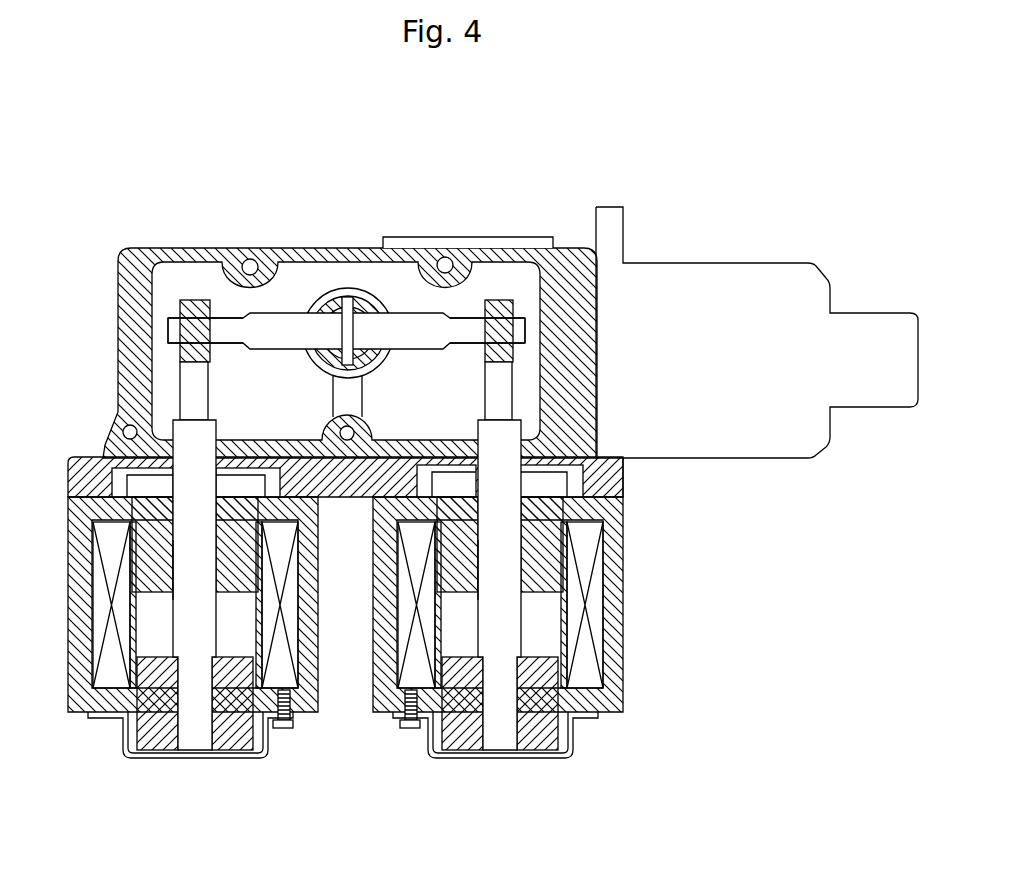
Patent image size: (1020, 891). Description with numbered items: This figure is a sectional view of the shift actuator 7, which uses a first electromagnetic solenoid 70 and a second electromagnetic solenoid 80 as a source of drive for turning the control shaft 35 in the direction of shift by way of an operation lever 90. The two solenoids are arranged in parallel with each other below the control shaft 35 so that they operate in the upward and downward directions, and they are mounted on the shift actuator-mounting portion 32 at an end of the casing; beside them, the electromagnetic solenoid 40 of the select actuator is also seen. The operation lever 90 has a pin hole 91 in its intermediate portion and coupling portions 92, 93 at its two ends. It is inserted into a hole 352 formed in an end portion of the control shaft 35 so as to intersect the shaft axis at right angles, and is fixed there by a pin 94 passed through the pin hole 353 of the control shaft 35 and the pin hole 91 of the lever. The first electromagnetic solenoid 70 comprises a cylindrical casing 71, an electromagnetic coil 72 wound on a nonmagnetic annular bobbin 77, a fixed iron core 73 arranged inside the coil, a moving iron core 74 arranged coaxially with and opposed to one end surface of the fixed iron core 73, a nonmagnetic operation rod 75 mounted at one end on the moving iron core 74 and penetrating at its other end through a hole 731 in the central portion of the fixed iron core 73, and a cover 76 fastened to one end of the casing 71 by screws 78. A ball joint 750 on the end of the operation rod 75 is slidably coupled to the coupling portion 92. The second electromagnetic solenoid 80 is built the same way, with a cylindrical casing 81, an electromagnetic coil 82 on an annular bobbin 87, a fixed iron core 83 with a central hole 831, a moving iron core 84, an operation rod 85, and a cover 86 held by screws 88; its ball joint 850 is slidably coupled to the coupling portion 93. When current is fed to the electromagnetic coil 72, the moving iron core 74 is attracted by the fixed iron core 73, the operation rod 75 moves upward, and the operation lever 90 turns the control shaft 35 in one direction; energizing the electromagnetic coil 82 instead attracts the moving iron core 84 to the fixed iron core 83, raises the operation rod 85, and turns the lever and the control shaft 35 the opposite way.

The shift actuator 7 is at (478, 166).
The electromagnetic solenoid 40 is at (787, 252).
The control shaft 35 is at (327, 293).
The pin hole 353 is at (385, 298).
The hole 352 is at (373, 317).
The pin hole 91 is at (337, 329).
The operation lever 90 is at (278, 320).
The coupling portion 93 is at (222, 323).
The coupling portion 92 is at (468, 320).
The pin 94 is at (345, 307).
The ball joint 850 is at (183, 302).
The ball joint 750 is at (497, 310).
The shift actuator-mounting portion 32 is at (80, 457).
The second electromagnetic solenoid 80 is at (216, 638).
The cylindrical casing 81 is at (308, 563).
The electromagnetic coil 82 is at (278, 646).
The fixed iron core 83 is at (242, 540).
The hole 831 is at (210, 573).
The moving iron core 84 is at (233, 733).
The operation rod 85 is at (203, 610).
The cover 86 is at (193, 765).
The annular bobbin 87 is at (262, 670).
The screws 88 is at (283, 730).
The first electromagnetic solenoid 70 is at (546, 644).
The cylindrical casing 71 is at (613, 635).
The electromagnetic coil 72 is at (583, 673).
The fixed iron core 73 is at (547, 534).
The hole 731 is at (515, 573).
The moving iron core 74 is at (540, 720).
The operation rod 75 is at (503, 628).
The cover 76 is at (483, 765).
The annular bobbin 77 is at (563, 572).
The screws 78 is at (411, 730).